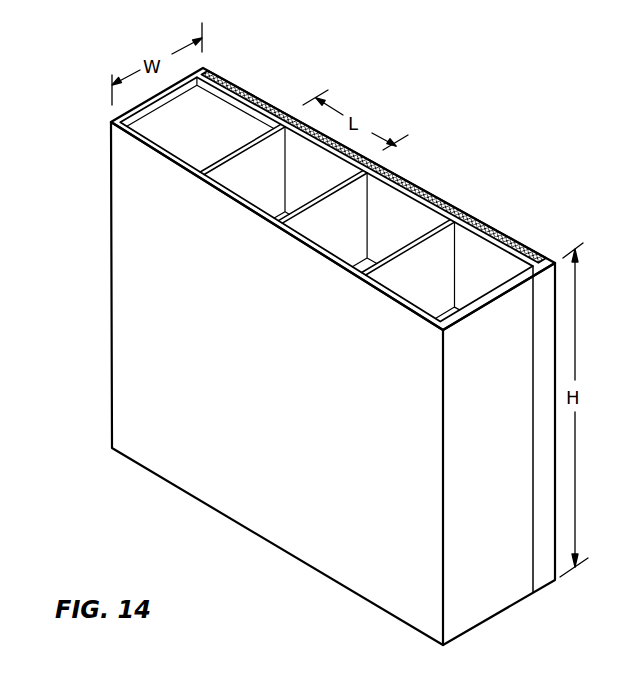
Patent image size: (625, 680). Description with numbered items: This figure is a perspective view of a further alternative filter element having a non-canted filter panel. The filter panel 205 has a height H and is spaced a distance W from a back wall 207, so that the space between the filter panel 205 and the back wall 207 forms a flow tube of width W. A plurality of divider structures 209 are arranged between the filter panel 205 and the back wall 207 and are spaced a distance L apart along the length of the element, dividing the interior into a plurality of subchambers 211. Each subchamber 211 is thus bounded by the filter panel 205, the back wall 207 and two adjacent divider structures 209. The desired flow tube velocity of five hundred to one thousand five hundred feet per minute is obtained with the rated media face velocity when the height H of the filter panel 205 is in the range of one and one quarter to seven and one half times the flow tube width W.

The filter panel 205 is at (417, 182).
The back wall 207 is at (125, 307).
The divider structures 209 is at (223, 166).
The subchambers 211 is at (255, 178).